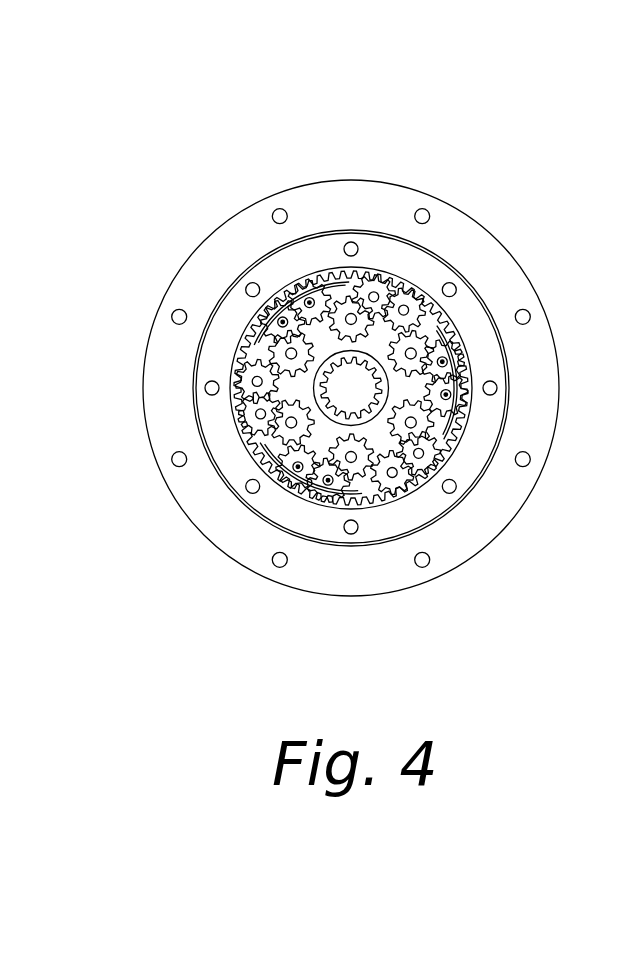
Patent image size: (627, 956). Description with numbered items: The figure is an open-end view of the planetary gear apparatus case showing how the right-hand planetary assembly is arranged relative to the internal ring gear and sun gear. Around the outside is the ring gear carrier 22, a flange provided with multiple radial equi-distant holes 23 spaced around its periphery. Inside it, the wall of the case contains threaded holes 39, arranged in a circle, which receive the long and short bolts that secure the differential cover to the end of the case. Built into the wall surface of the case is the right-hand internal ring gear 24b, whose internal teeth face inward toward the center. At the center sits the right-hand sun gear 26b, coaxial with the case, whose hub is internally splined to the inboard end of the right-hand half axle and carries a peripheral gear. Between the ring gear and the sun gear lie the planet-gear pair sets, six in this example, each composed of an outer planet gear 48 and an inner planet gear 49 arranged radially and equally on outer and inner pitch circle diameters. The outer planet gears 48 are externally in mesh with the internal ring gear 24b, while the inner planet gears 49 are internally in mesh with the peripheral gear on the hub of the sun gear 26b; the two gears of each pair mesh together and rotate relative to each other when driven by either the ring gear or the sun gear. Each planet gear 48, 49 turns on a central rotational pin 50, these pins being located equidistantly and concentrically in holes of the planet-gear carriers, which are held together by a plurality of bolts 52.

The ring gear carrier 22 is at (341, 201).
The radial equi-distant holes 23 is at (406, 210).
The right-hand internal ring gear 24b is at (441, 488).
The right-hand sun gear 26b is at (330, 437).
The threaded holes 39 is at (353, 522).
The outer planet gear 48 is at (420, 290).
The inner planet gear 49 is at (444, 360).
The central rotational pin 50 is at (309, 302).
The bolts 52 is at (283, 322).